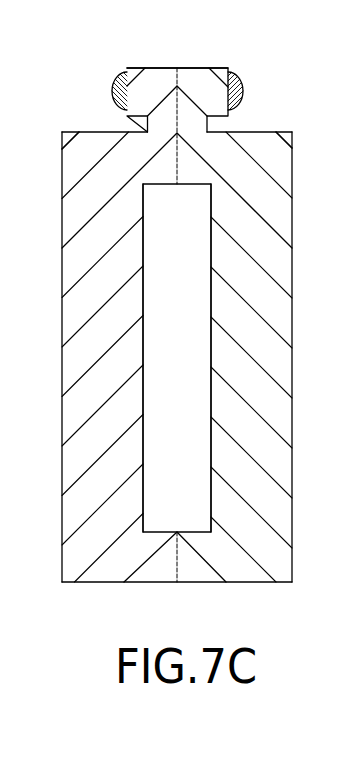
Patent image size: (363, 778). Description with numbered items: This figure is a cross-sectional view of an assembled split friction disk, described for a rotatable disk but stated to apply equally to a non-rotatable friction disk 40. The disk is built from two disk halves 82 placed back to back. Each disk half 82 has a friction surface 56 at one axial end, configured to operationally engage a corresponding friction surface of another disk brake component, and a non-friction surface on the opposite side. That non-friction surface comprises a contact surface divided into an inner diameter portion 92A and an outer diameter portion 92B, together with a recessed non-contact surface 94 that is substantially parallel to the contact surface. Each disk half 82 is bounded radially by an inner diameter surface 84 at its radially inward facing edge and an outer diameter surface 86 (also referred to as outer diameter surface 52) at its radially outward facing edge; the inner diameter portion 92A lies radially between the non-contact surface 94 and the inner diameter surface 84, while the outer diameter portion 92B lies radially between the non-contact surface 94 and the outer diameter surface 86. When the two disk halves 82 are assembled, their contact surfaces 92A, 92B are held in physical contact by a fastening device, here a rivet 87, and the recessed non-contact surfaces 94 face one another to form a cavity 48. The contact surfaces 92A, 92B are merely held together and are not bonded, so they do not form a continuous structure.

The non-rotatable friction disk 40 is at (156, 46).
The cavity 48 is at (190, 424).
The outer diameter surface 52 is at (138, 67).
The friction surface 56 is at (62, 313).
The disk half 82 is at (57, 114).
The inner diameter surface 84 is at (122, 583).
The outer diameter surface 86 is at (100, 132).
The rivet 87 is at (242, 80).
The inner diameter portion 92A is at (170, 584).
The outer diameter portion 92B is at (180, 155).
The non-contact surface 94 is at (143, 373).